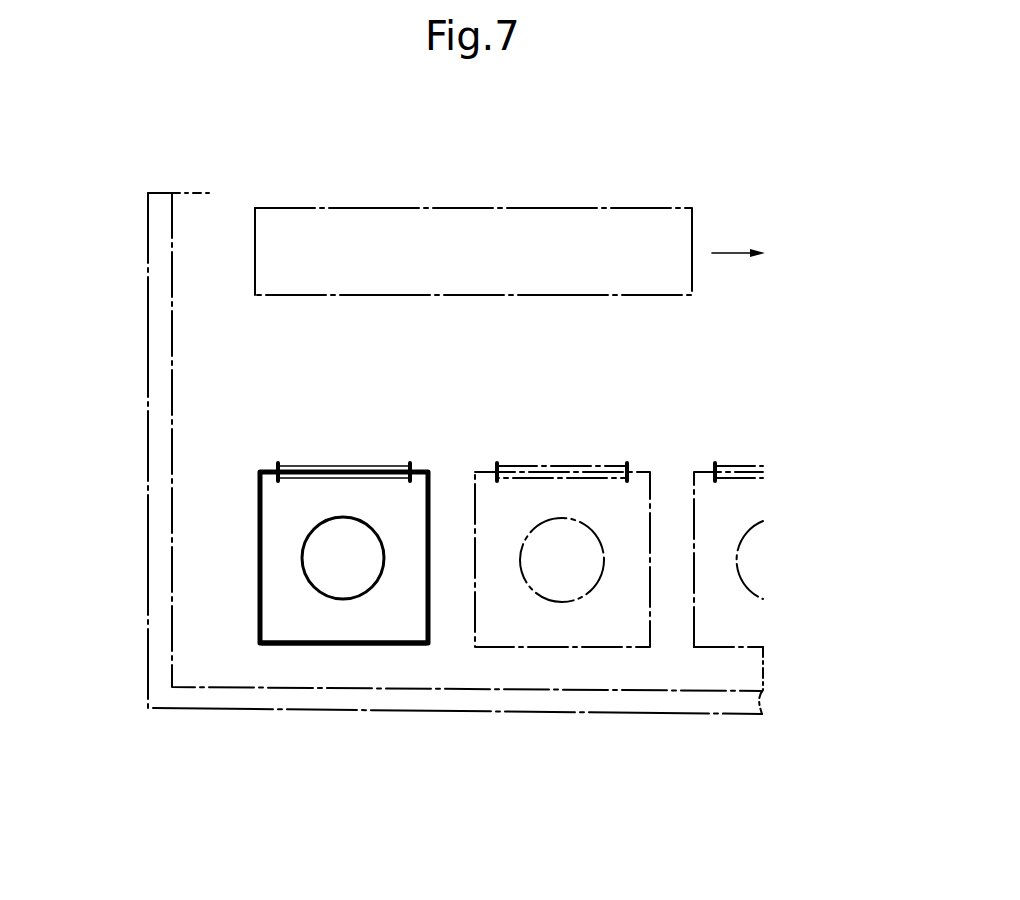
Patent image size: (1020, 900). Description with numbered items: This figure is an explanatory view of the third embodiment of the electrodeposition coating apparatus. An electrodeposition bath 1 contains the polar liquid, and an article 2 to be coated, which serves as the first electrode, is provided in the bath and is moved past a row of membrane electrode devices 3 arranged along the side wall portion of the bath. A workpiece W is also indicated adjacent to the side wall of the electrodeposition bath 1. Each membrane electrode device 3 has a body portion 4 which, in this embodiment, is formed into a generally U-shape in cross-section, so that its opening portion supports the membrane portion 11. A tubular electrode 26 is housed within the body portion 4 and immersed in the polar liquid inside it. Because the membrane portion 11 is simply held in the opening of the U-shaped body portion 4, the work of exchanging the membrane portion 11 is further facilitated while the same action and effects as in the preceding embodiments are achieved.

The electrodeposition bath 1 is at (145, 347).
The workpiece W is at (203, 303).
The article to be coated 2 is at (603, 209).
The membrane electrode device 3 is at (252, 587).
The body portion 4 is at (325, 642).
The membrane portion 11 is at (368, 466).
The tubular electrode 26 is at (310, 588).